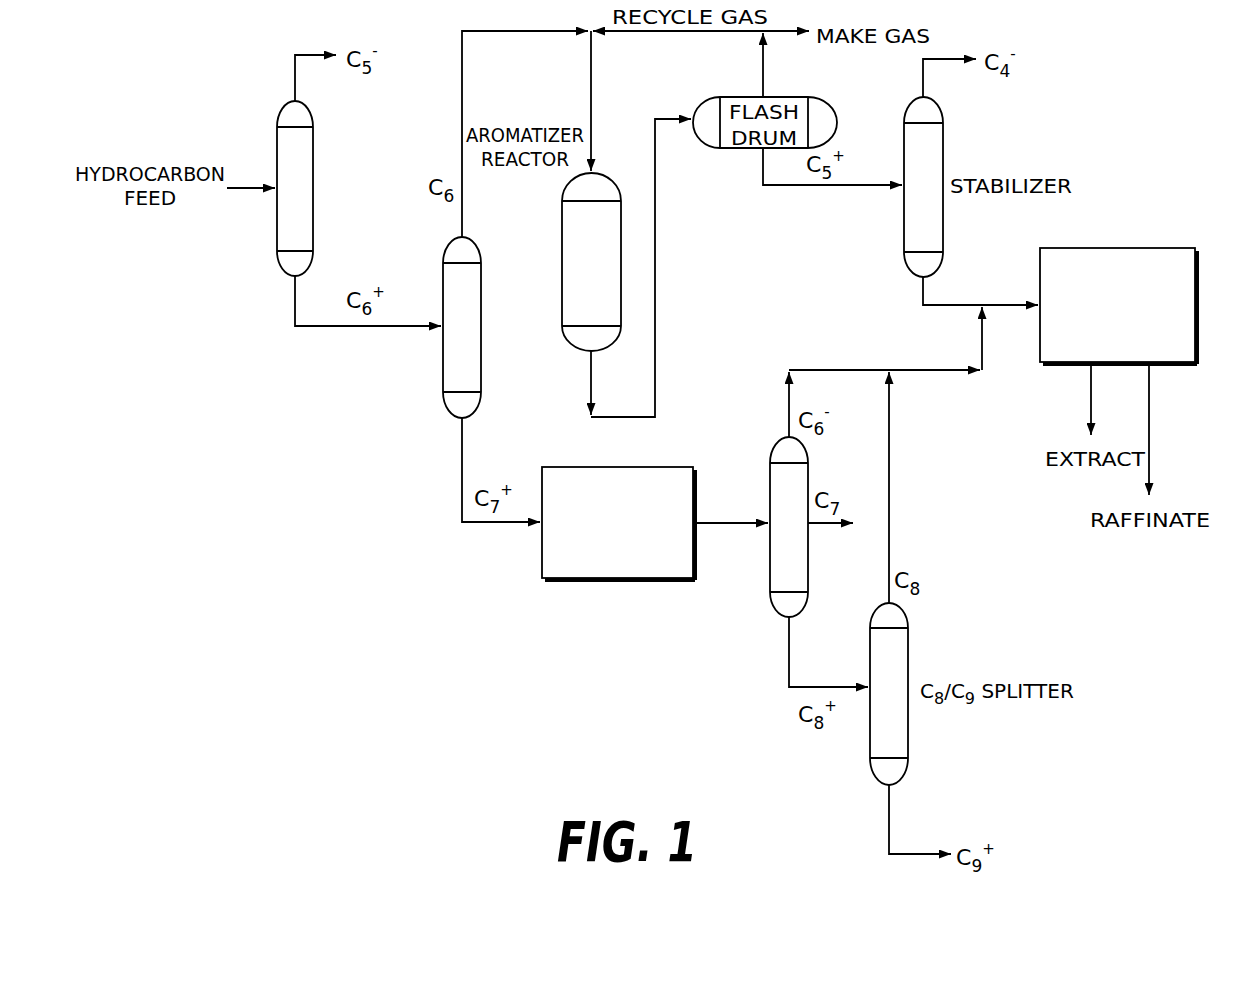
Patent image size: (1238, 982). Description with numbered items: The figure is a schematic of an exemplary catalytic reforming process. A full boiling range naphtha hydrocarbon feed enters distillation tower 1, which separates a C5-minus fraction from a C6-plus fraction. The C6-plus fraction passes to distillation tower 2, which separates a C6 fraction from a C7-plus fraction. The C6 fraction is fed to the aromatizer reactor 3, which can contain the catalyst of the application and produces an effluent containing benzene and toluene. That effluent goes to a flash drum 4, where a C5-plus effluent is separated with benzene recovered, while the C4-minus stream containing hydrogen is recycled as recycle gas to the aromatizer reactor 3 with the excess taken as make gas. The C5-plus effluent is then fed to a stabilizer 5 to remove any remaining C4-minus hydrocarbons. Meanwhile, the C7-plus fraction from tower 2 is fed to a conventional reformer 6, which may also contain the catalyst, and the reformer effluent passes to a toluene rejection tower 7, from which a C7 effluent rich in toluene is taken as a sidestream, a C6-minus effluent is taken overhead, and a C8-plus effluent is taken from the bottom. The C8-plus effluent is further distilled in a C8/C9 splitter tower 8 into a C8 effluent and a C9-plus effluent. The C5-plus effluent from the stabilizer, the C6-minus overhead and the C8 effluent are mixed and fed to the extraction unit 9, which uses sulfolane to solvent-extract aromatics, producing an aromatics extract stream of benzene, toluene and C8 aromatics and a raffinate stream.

The distillation tower 1 is at (288, 200).
The distillation tower 2 is at (455, 338).
The aromatizer reactor 3 is at (584, 266).
The flash drum 4 is at (816, 135).
The stabilizer 5 is at (916, 190).
The reformer 6 is at (665, 567).
The toluene rejection tower 7 is at (782, 535).
The C8/C9 splitter tower 8 is at (882, 695).
The extraction unit 9 is at (1167, 354).